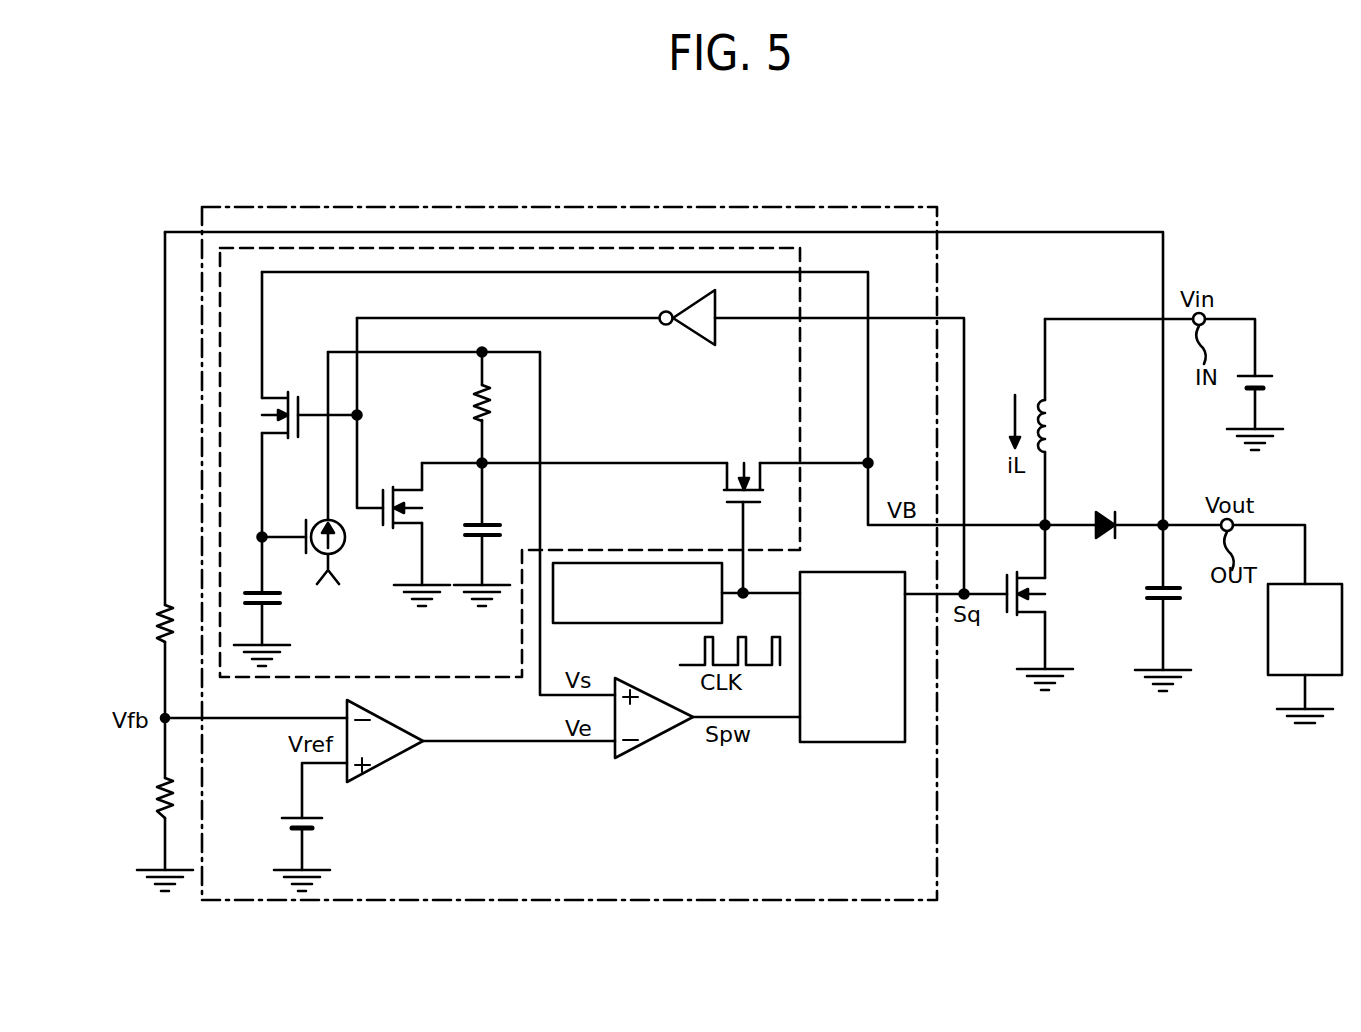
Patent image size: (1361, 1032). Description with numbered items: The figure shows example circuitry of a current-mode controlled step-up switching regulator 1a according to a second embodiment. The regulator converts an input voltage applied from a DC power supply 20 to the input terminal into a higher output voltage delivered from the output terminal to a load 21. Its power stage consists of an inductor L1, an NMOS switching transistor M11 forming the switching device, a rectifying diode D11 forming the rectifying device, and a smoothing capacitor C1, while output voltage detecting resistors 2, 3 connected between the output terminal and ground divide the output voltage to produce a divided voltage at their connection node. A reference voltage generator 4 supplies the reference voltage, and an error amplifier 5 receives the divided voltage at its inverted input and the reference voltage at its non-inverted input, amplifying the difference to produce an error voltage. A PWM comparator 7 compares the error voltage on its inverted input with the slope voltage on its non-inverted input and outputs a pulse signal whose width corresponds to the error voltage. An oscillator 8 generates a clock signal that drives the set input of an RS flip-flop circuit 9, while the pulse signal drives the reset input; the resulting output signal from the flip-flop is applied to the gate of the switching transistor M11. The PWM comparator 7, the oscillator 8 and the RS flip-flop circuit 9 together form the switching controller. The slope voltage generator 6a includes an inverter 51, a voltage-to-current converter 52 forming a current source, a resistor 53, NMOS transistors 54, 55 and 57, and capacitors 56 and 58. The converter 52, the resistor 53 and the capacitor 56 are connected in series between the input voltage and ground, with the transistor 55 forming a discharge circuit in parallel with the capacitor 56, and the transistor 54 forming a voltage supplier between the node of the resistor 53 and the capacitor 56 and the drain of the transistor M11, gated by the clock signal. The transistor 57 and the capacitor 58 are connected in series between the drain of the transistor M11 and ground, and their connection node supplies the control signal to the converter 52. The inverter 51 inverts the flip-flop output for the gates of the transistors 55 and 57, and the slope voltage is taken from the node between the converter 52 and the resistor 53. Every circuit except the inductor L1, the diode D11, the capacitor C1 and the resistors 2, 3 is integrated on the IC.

The switching regulator 1a is at (1006, 147).
The output voltage detecting resistor 2 is at (160, 612).
The output voltage detecting resistor 3 is at (160, 787).
The reference voltage generator 4 is at (325, 826).
The error amplifier 5 is at (400, 758).
The slope voltage generator 6a is at (802, 392).
The PWM comparator 7 is at (655, 740).
The oscillator 8 is at (622, 624).
The RS flip-flop circuit 9 is at (862, 743).
The DC power supply 20 is at (1272, 384).
The load 21 is at (1318, 583).
The inverter 51 is at (688, 338).
The voltage-to-current converter 52 is at (320, 522).
The resistor 53 is at (475, 400).
The NMOS transistor 54 is at (723, 492).
The NMOS transistor 55 is at (404, 482).
The capacitor 56 is at (490, 522).
The NMOS transistor 57 is at (281, 391).
The capacitor 58 is at (270, 606).
The element IC is at (938, 776).
The inductor L1 is at (1052, 422).
The rectifying diode D11 is at (1105, 510).
The NMOS switching transistor M11 is at (1050, 600).
The smoothing capacitor C1 is at (1150, 587).